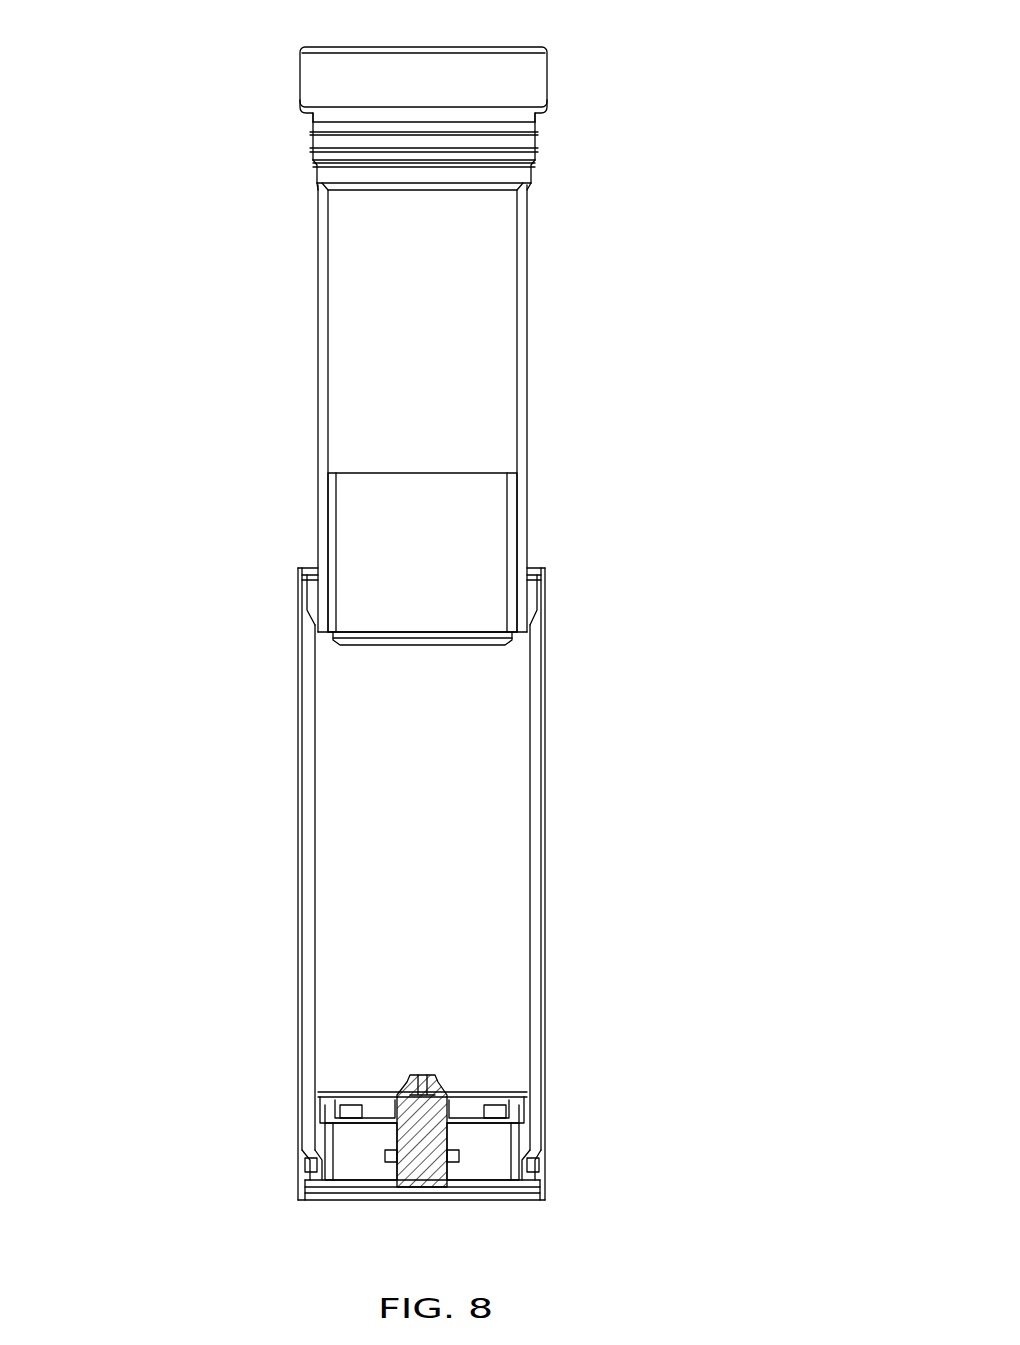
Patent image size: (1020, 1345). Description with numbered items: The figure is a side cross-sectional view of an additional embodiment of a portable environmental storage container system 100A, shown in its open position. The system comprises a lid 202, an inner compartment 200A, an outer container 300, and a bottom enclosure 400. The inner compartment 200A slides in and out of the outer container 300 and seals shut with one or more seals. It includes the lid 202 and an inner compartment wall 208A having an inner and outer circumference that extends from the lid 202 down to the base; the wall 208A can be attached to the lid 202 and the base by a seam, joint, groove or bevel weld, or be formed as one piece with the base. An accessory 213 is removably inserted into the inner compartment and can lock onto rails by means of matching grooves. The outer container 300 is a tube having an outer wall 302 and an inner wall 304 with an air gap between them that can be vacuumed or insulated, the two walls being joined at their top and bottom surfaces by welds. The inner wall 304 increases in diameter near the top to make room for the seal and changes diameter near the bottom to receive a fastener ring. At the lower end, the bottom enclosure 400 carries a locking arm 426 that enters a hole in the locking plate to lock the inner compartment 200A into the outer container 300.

The portable environmental storage container system 100A is at (262, 66).
The lid 202 is at (510, 78).
The inner compartment 200A is at (449, 372).
The inner compartment wall 208A is at (375, 315).
The accessory 213 is at (465, 520).
The outer container 300 is at (428, 884).
The outer wall 302 is at (548, 850).
The inner wall 304 is at (318, 856).
The locking arm 426 is at (455, 1090).
The bottom enclosure 400 is at (530, 1131).